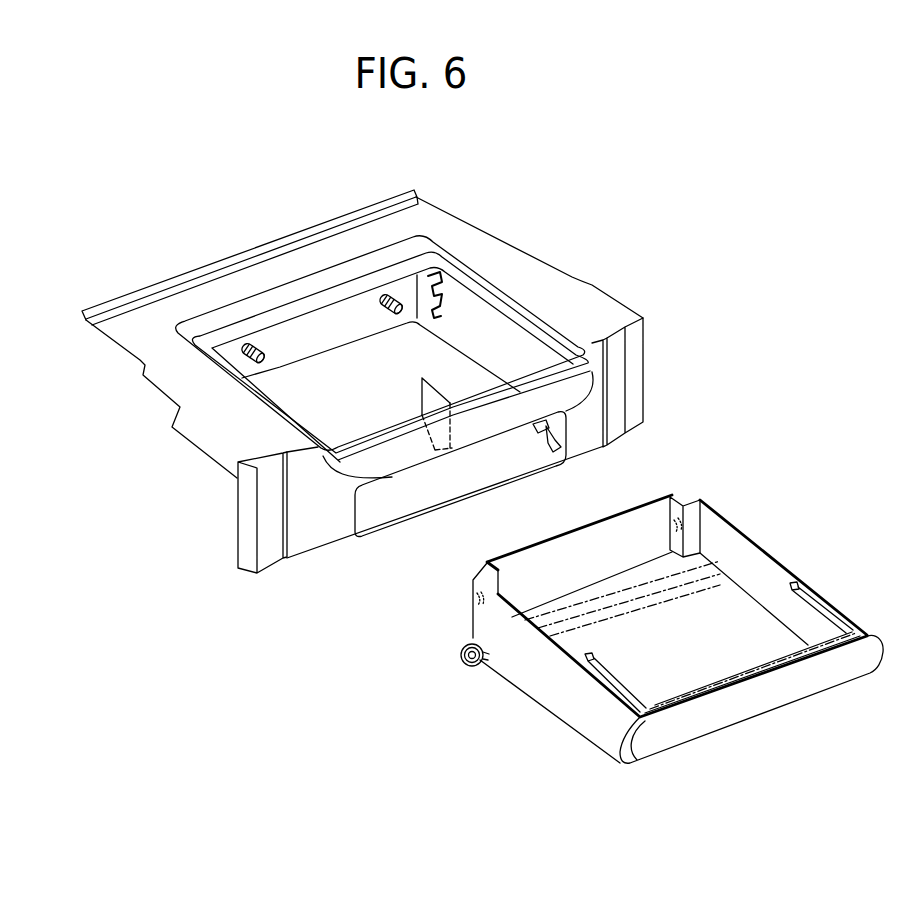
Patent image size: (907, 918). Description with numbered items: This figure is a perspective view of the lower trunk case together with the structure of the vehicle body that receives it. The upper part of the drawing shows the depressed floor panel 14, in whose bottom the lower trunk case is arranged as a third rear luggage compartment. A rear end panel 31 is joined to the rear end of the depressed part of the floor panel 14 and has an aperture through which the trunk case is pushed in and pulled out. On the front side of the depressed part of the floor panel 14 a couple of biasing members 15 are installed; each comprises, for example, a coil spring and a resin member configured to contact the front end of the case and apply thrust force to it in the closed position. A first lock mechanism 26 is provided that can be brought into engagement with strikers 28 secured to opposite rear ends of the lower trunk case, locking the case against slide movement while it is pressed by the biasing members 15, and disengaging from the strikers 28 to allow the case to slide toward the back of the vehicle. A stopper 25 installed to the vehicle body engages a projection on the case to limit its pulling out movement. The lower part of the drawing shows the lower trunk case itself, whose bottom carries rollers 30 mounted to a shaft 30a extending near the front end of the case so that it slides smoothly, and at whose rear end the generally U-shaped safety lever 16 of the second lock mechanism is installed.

The floor panel 14 is at (177, 278).
The biasing members 15 is at (266, 362).
The safety lever 16 is at (823, 607).
The stopper 25 is at (545, 455).
The first lock mechanism 26 is at (442, 280).
The strikers 28 is at (706, 517).
The rollers 30 is at (477, 670).
The shaft 30a is at (660, 587).
The rear end panel 31 is at (398, 537).